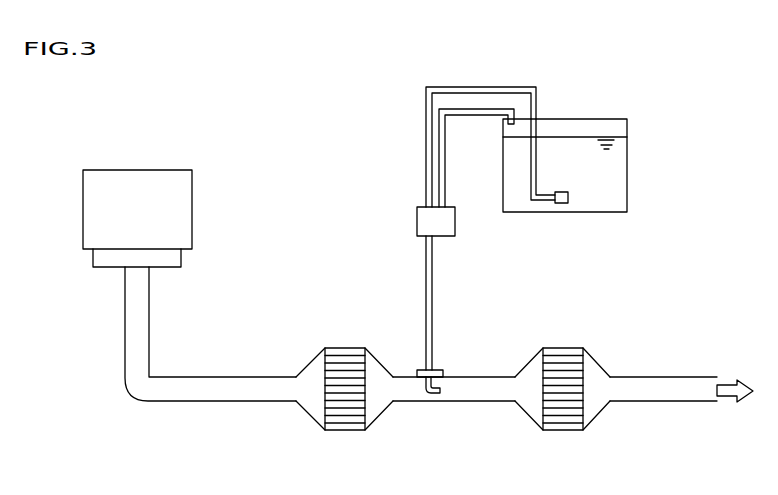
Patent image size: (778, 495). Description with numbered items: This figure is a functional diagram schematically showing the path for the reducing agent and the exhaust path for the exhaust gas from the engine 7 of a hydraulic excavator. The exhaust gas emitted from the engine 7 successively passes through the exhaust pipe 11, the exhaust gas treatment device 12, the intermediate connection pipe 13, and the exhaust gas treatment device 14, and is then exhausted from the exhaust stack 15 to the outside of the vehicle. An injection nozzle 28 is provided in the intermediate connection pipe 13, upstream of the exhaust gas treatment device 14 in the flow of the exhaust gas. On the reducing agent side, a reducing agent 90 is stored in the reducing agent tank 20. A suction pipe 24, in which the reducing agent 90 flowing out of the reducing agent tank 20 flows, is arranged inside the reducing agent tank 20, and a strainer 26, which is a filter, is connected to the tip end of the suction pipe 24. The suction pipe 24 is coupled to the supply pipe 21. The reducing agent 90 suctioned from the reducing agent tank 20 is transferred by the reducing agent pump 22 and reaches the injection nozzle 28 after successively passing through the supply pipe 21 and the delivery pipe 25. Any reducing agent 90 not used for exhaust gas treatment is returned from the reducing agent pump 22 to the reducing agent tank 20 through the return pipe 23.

The engine 7 is at (97, 209).
The exhaust pipe 11 is at (205, 392).
The exhaust gas treatment device 12 is at (345, 420).
The intermediate connection pipe 13 is at (463, 390).
The exhaust gas treatment device 14 is at (566, 420).
The exhaust stack 15 is at (668, 390).
The reducing agent tank 20 is at (627, 143).
The supply pipe 21 is at (425, 163).
The reducing agent pump 22 is at (423, 222).
The return pipe 23 is at (446, 163).
The suction pipe 24 is at (537, 158).
The delivery pipe 25 is at (426, 302).
The strainer 26 is at (562, 205).
The injection nozzle 28 is at (435, 370).
The reducing agent 90 is at (615, 167).